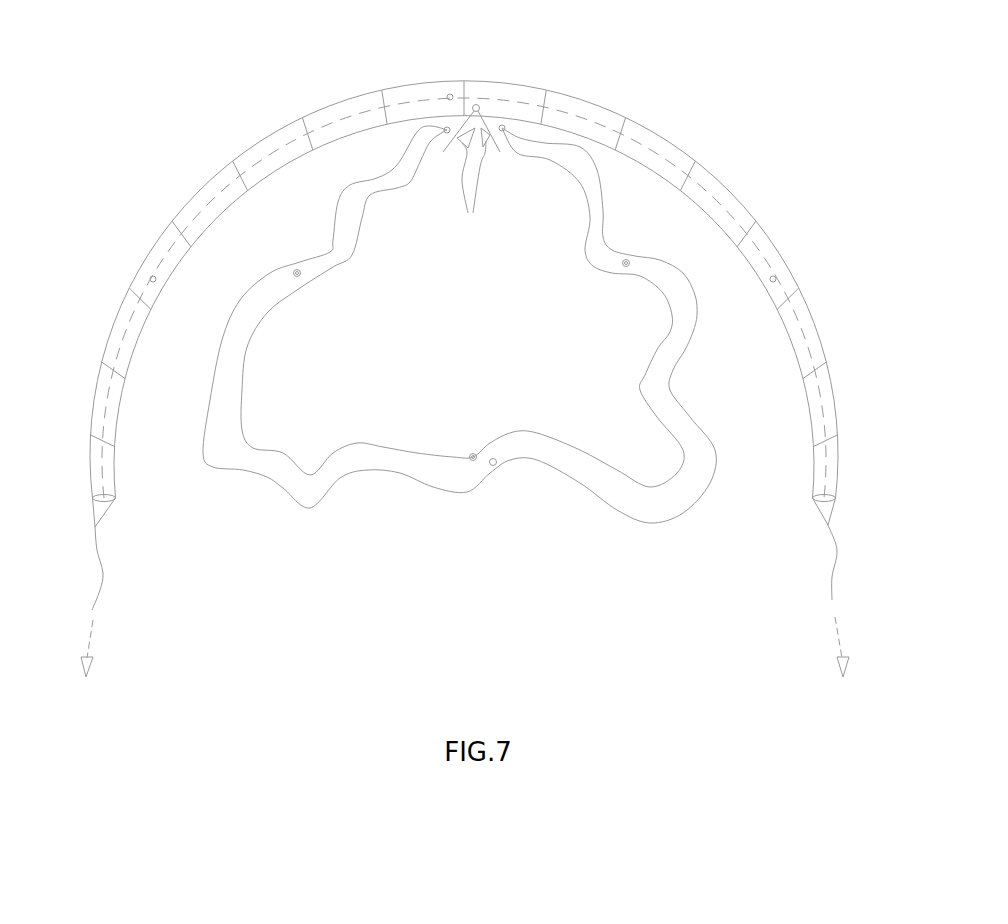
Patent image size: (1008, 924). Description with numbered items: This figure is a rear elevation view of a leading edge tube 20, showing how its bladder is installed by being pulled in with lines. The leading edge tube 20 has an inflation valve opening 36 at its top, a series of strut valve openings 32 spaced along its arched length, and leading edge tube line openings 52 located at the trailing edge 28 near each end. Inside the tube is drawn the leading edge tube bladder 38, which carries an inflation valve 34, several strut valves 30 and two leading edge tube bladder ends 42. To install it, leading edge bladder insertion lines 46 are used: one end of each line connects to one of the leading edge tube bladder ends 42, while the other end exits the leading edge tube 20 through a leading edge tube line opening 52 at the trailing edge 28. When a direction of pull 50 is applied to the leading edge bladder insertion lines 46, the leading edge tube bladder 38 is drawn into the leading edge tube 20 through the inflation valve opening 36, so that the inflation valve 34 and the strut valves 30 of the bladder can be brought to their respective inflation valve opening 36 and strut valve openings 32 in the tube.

The leading edge tube 20 is at (570, 97).
The trailing edge 28 is at (102, 525).
The strut valves 30 is at (301, 276).
The strut valve openings 32 is at (447, 97).
The inflation valve 34 is at (494, 466).
The inflation valve opening 36 is at (478, 105).
The leading edge tube bladder 38 is at (372, 453).
The leading edge tube bladder ends 42 is at (444, 130).
The leading edge bladder insertion lines 46 is at (108, 585).
The direction of pull 50 is at (100, 642).
The leading edge tube line openings 52 is at (95, 527).